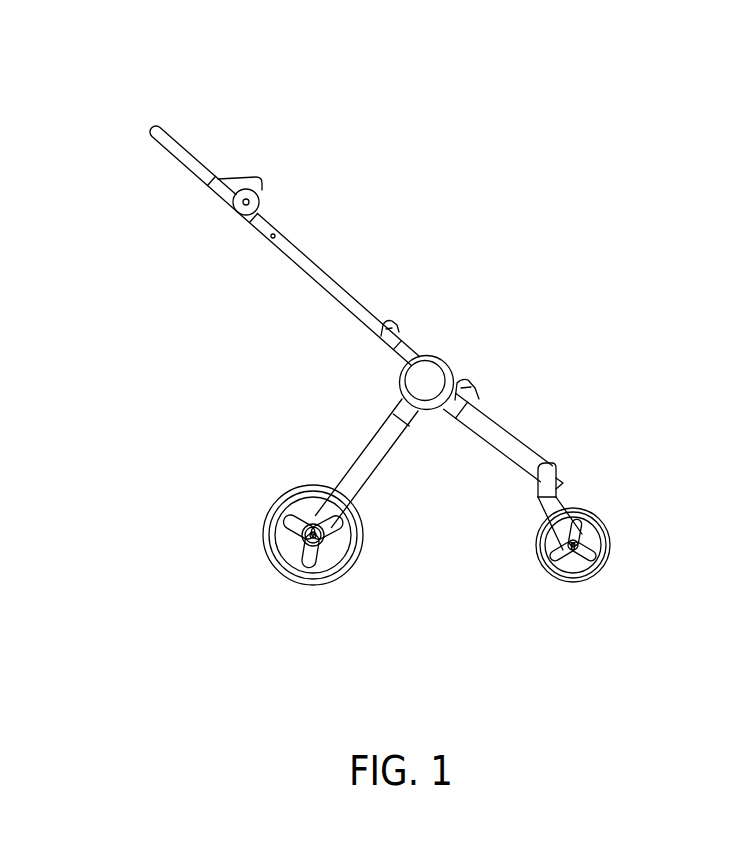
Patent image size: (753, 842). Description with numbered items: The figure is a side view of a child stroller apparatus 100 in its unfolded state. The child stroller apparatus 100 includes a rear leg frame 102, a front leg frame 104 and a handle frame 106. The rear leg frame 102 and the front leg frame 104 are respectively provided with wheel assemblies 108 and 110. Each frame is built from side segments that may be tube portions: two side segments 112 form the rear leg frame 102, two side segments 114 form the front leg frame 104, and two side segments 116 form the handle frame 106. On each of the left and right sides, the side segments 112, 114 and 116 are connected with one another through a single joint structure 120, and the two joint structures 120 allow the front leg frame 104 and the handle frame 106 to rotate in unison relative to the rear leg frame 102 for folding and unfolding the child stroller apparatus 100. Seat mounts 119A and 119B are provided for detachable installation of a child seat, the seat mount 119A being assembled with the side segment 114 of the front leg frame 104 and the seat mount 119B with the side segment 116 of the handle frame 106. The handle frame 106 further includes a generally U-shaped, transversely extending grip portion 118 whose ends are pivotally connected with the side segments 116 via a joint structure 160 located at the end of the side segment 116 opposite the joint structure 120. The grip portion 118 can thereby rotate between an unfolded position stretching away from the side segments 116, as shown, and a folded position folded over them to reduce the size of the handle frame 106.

The child stroller apparatus 100 is at (60, 80).
The rear leg frame 102 is at (377, 473).
The front leg frame 104 is at (484, 447).
The handle frame 106 is at (253, 255).
The wheel assembly 108 is at (264, 546).
The wheel assembly 110 is at (611, 546).
The side segment 112 is at (360, 453).
The side segment 114 is at (513, 439).
The side segment 116 is at (346, 293).
The grip portion 118 is at (188, 153).
The seat mount 119A is at (472, 387).
The seat mount 119B is at (393, 325).
The joint structure 120 is at (447, 352).
The joint structure 160 is at (265, 203).